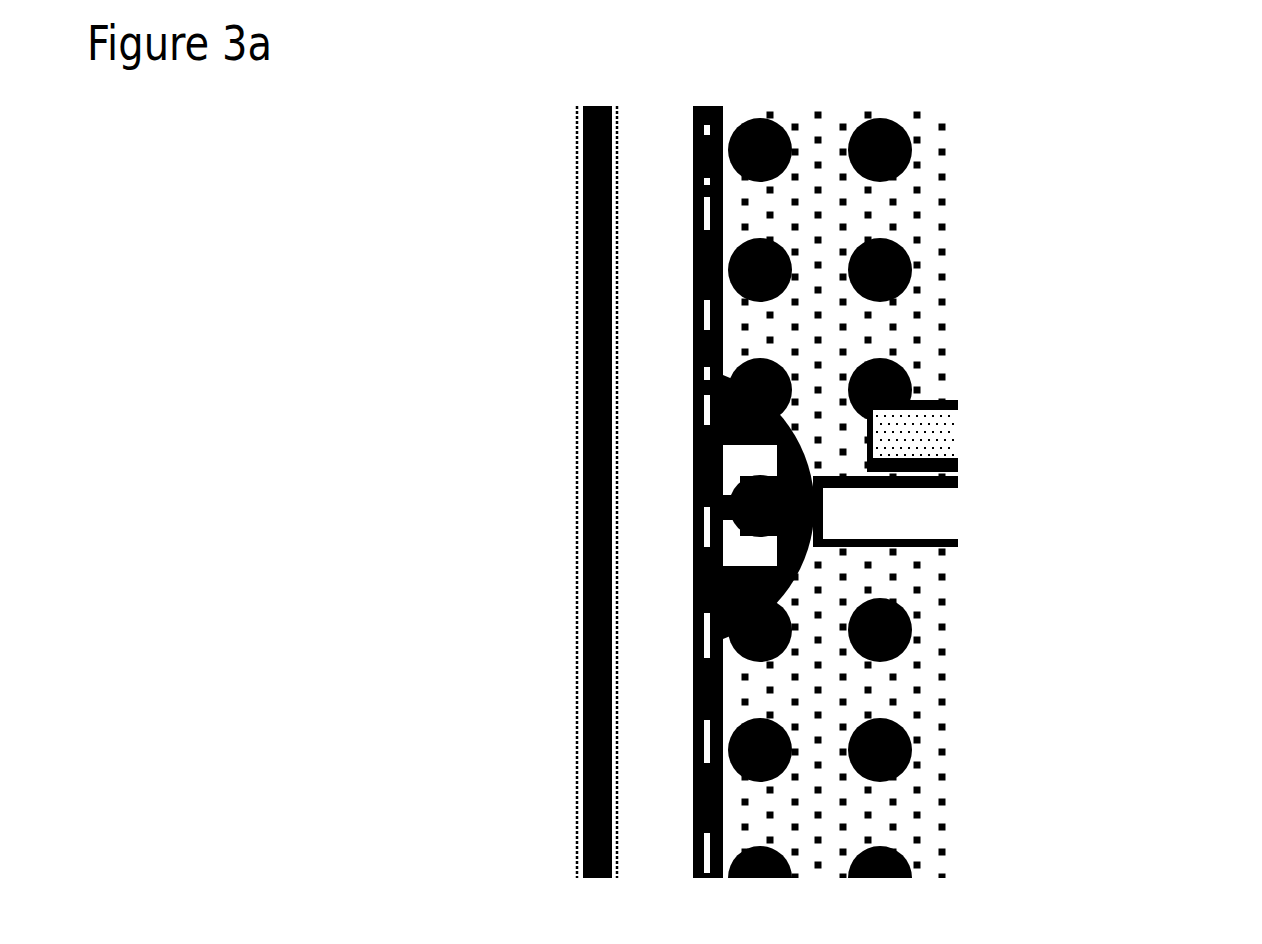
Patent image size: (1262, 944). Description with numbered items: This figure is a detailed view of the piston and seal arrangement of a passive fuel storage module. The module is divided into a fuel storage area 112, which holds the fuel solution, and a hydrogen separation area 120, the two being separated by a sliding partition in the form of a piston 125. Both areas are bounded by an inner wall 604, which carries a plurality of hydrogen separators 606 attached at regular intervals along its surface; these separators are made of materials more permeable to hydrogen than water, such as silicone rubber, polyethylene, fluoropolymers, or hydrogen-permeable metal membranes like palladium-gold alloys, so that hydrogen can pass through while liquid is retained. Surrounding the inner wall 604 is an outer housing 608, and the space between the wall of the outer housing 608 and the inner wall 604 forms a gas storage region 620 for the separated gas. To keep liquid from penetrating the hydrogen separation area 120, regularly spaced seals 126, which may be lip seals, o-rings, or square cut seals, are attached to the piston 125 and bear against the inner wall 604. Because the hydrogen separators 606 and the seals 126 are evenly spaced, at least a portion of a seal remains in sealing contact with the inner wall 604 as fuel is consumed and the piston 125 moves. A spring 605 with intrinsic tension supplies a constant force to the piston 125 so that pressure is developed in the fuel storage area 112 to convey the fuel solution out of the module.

The fuel storage area 112 is at (913, 688).
The hydrogen separation area 120 is at (895, 207).
The piston 125 is at (937, 510).
The seals 126 is at (700, 435).
The inner wall 604 is at (723, 193).
The spring 605 is at (937, 423).
The hydrogen separators 606 is at (735, 517).
The outer housing 608 is at (578, 800).
The gas storage region 620 is at (638, 321).